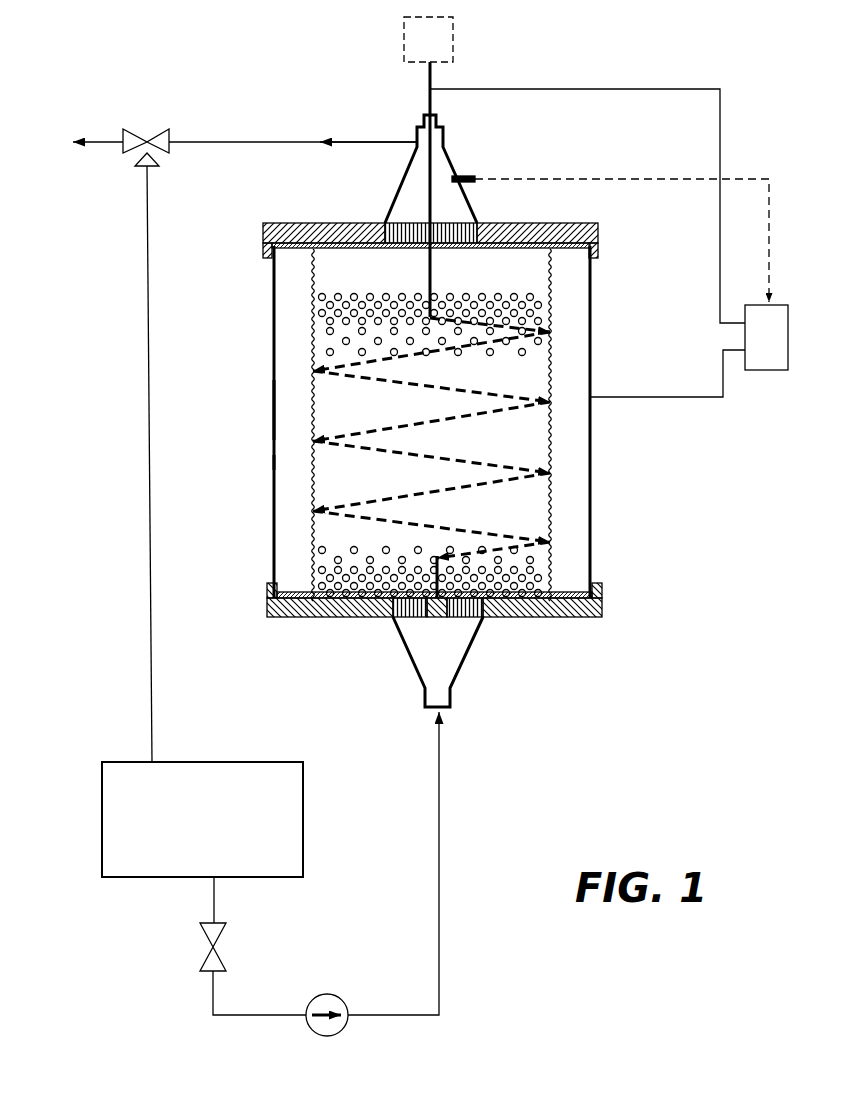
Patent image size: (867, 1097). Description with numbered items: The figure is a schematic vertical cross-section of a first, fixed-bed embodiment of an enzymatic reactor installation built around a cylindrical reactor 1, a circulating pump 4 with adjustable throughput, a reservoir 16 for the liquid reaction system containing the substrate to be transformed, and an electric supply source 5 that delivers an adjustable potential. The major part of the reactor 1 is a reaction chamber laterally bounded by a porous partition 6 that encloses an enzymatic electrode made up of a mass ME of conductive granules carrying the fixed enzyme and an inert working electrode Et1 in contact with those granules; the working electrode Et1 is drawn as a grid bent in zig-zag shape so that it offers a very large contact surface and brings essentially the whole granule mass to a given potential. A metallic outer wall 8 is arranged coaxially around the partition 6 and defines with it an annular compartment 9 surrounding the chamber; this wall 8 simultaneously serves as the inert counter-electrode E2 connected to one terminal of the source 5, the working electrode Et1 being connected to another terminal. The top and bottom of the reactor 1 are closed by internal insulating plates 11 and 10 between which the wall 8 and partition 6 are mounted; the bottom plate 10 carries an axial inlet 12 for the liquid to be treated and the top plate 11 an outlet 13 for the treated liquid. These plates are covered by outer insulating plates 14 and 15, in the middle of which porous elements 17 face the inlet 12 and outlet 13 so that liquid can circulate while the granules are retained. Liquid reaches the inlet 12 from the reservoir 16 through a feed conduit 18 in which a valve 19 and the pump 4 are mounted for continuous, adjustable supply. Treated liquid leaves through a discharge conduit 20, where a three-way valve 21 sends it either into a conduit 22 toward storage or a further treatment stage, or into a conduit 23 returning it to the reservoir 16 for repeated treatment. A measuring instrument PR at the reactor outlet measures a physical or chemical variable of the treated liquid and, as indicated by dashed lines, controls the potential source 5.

The cylindrical reactor 1 is at (600, 456).
The circulating pump 4 is at (332, 1040).
The electric supply source 5 is at (771, 374).
The porous partition 6 is at (310, 344).
The metallic outer wall 8 is at (272, 412).
The annular compartment 9 is at (290, 522).
The bottom internal insulating plate 10 is at (285, 585).
The top internal insulating plate 11 is at (290, 267).
The axial inlet 12 is at (405, 620).
The outlet 13 is at (468, 246).
The bottom outer insulating plate 14 is at (292, 618).
The top outer insulating plate 15 is at (278, 224).
The reservoir 16 is at (303, 810).
The porous elements 17 is at (408, 218).
The feed conduit 18 is at (438, 878).
The valve 19 is at (216, 936).
The discharge conduit 20 is at (228, 140).
The three-way valve 21 is at (149, 140).
The conduit 22 is at (108, 138).
The return conduit 23 is at (148, 316).
The measuring instrument PR is at (468, 174).
The mass of enzymatic particles ME is at (359, 296).
The working electrode Et1 is at (346, 428).
The counter-electrode E2 is at (284, 466).